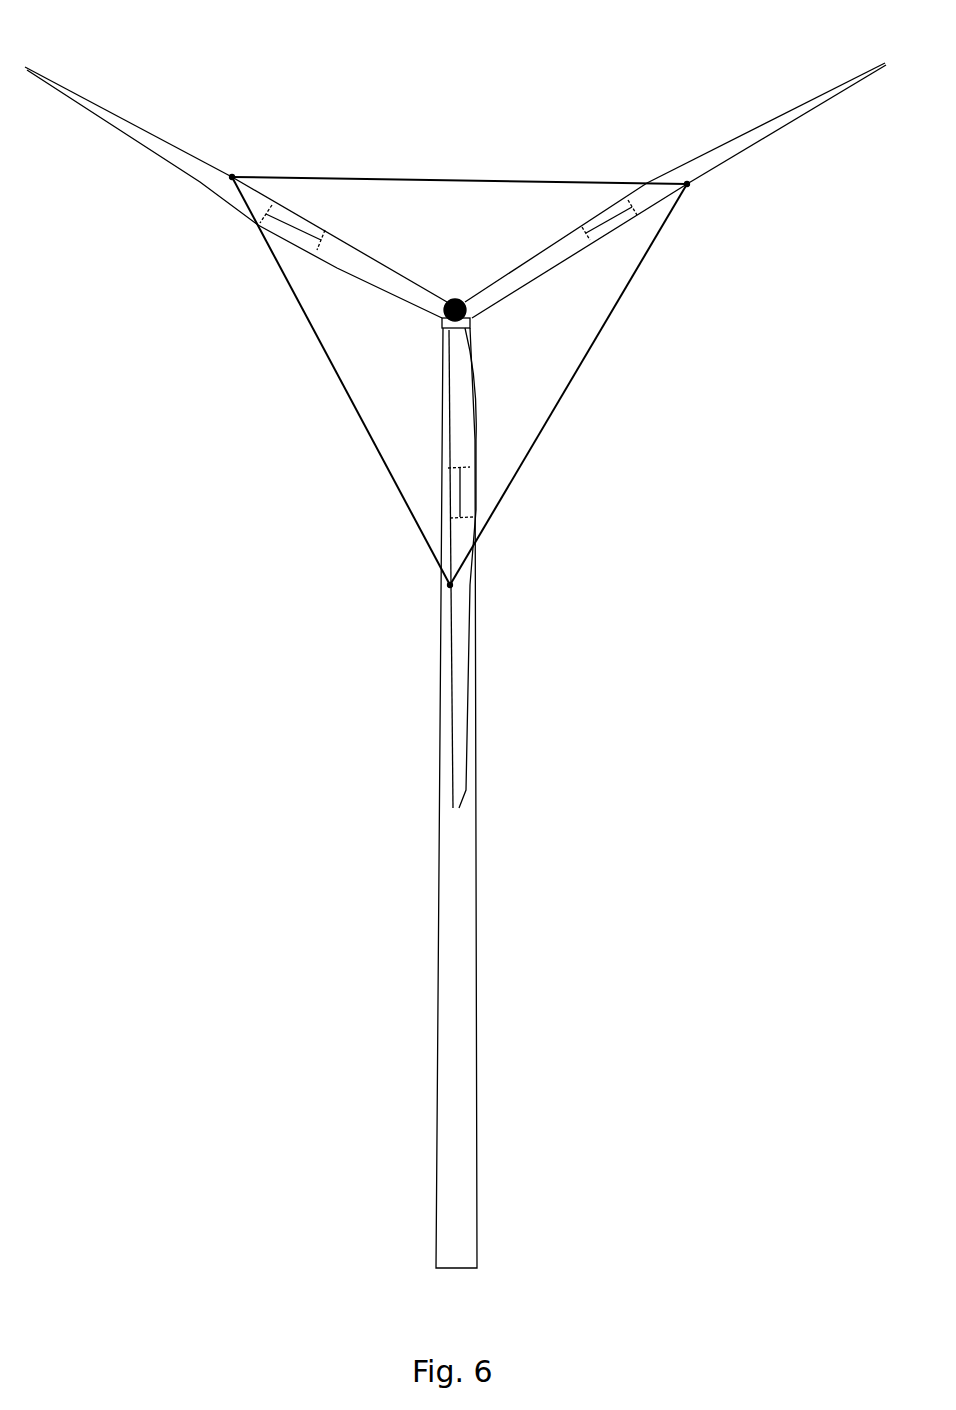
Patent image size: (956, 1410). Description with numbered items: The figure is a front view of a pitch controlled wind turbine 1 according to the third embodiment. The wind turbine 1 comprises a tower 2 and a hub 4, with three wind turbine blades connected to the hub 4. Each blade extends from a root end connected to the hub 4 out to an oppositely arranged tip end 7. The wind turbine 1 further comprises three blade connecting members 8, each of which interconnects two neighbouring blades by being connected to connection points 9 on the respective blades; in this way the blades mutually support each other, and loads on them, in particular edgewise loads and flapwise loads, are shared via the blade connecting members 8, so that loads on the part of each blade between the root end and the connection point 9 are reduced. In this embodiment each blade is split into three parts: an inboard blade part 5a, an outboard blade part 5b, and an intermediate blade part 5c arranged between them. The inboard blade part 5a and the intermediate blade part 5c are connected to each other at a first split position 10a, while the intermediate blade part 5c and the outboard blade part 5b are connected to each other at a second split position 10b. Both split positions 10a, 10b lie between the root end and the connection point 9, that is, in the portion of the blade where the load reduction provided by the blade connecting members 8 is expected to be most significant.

The wind turbine 1 is at (252, 855).
The tower 2 is at (456, 1033).
The hub 4 is at (457, 303).
The inboard blade part 5a is at (357, 268).
The outboard blade part 5b is at (122, 123).
The intermediate blade part 5c is at (295, 223).
The tip end 7 is at (25, 67).
The blade connecting member 8 is at (430, 178).
The connection point 9 is at (232, 176).
The first split position 10a is at (323, 240).
The second split position 10b is at (272, 205).